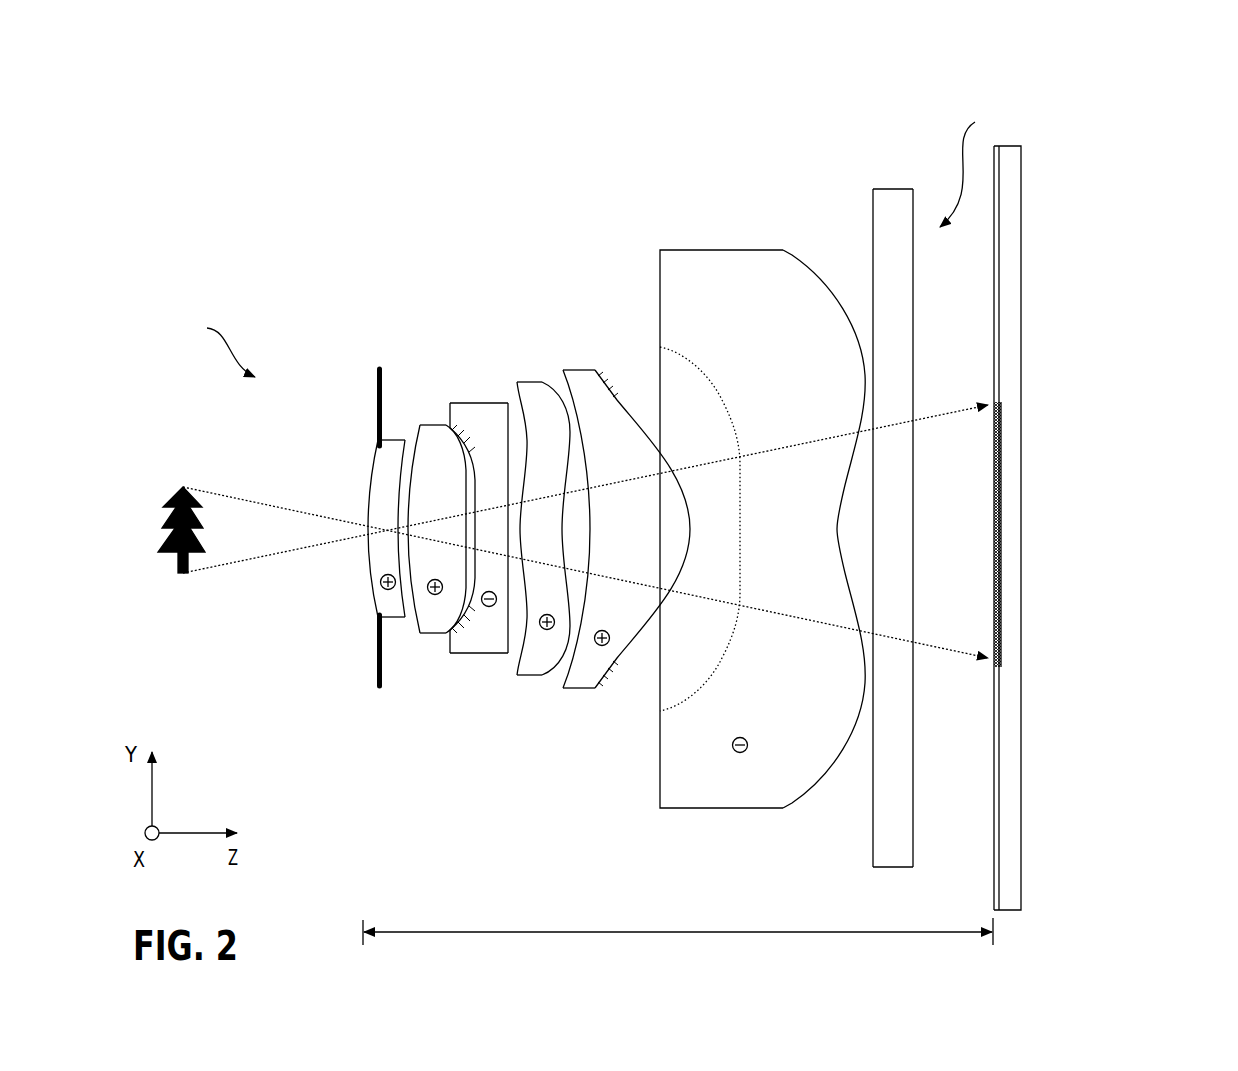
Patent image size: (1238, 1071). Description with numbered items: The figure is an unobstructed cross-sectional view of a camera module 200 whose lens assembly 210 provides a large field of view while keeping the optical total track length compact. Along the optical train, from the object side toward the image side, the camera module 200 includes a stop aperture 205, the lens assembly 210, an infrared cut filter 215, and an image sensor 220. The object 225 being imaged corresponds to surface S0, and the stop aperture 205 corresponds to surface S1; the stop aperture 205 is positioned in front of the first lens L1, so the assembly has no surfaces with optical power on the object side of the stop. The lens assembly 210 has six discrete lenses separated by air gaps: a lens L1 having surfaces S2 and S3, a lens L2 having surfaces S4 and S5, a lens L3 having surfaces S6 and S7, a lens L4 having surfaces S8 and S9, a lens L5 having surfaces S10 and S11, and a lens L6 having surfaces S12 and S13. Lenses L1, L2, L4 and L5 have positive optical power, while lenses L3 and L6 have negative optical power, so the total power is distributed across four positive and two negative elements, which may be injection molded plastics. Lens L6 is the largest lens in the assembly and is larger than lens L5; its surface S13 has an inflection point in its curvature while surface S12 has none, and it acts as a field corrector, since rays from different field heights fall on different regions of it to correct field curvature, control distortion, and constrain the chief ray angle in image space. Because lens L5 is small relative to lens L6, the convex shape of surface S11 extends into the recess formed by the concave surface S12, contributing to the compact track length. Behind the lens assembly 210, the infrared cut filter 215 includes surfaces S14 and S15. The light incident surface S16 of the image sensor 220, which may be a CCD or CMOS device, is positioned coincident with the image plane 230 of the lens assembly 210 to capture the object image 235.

The camera module 200 is at (243, 160).
The stop aperture 205 is at (375, 377).
The lens assembly 210 is at (865, 213).
The infrared cut filter (IRCF) 215 is at (888, 188).
The image sensor 220 is at (1022, 472).
The object 225 is at (180, 488).
The image plane 230 is at (993, 893).
The object image 235 is at (1000, 532).
The lens L1 is at (393, 516).
The lens L2 is at (448, 463).
The lens L3 is at (497, 446).
The lens L4 is at (547, 515).
The lens L5 is at (642, 513).
The lens L6 is at (798, 373).
The object surface S0 is at (180, 575).
The stop aperture surface S1 is at (376, 662).
The object-side surface of lens L1 S2 is at (372, 580).
The image-side surface of lens L1 S3 is at (410, 450).
The object-side surface of lens L2 S4 is at (425, 620).
The image-side surface of lens L2 S5 is at (460, 467).
The object-side surface of lens L3 S6 is at (466, 610).
The image-side surface of lens L3 S7 is at (510, 403).
The object-side surface of lens L4 S8 is at (517, 647).
The image-side surface of lens L4 S9 is at (555, 387).
The object-side surface of lens L5 S10 is at (557, 670).
The image-side surface of lens L5 S11 is at (618, 400).
The object-side surface of lens L6 S12 is at (717, 390).
The image-side surface of lens L6 S13 is at (855, 615).
The object-side surface of IRCF S14 is at (873, 262).
The image-side surface of IRCF S15 is at (912, 850).
The light incident surface of image sensor S16 is at (993, 787).